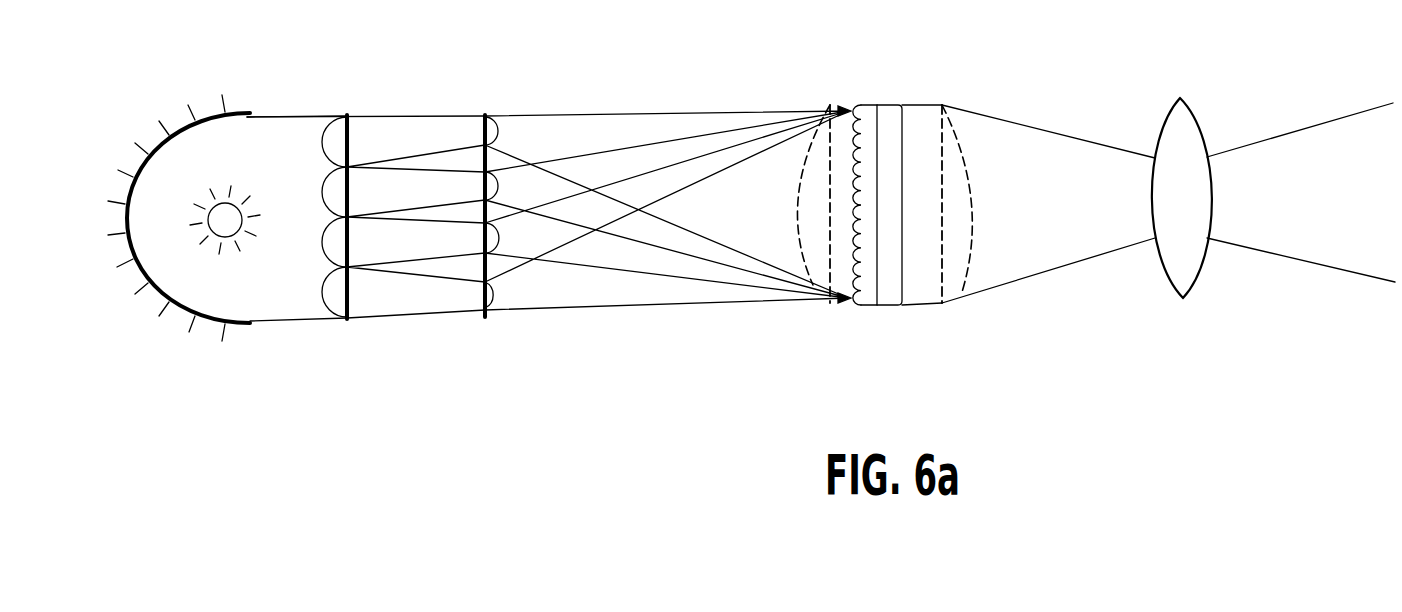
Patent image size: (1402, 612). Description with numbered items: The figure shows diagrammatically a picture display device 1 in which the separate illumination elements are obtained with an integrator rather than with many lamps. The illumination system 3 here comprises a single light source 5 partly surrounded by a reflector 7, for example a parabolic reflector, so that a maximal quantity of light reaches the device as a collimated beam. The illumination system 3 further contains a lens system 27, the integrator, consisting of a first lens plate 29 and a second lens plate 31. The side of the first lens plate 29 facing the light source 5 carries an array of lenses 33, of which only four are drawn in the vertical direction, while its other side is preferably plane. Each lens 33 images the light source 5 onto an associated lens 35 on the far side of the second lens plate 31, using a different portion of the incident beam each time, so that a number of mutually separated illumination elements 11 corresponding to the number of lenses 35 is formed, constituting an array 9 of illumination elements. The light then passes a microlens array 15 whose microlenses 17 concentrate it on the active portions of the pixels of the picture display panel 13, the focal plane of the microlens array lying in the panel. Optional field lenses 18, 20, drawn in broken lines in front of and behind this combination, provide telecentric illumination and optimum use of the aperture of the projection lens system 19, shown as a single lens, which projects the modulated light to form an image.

The picture display device 1 is at (282, 419).
The illumination system 3 is at (151, 322).
The light source 5 is at (223, 205).
The reflector 7 is at (182, 123).
The array of illumination elements 9 is at (488, 336).
The illumination elements 11 is at (490, 134).
The picture display panel 13 is at (892, 300).
The microlens array 15 is at (870, 300).
The microlenses 17 is at (852, 132).
The field lens 18 is at (813, 285).
The projection lens system 19 is at (1177, 267).
The field lens 20 is at (962, 292).
The lens system 27 is at (510, 48).
The first lens plate 29 is at (322, 225).
The second lens plate 31 is at (516, 221).
The lenses of the first lens plate 33 is at (321, 242).
The lenses of the second lens plate 35 is at (533, 262).